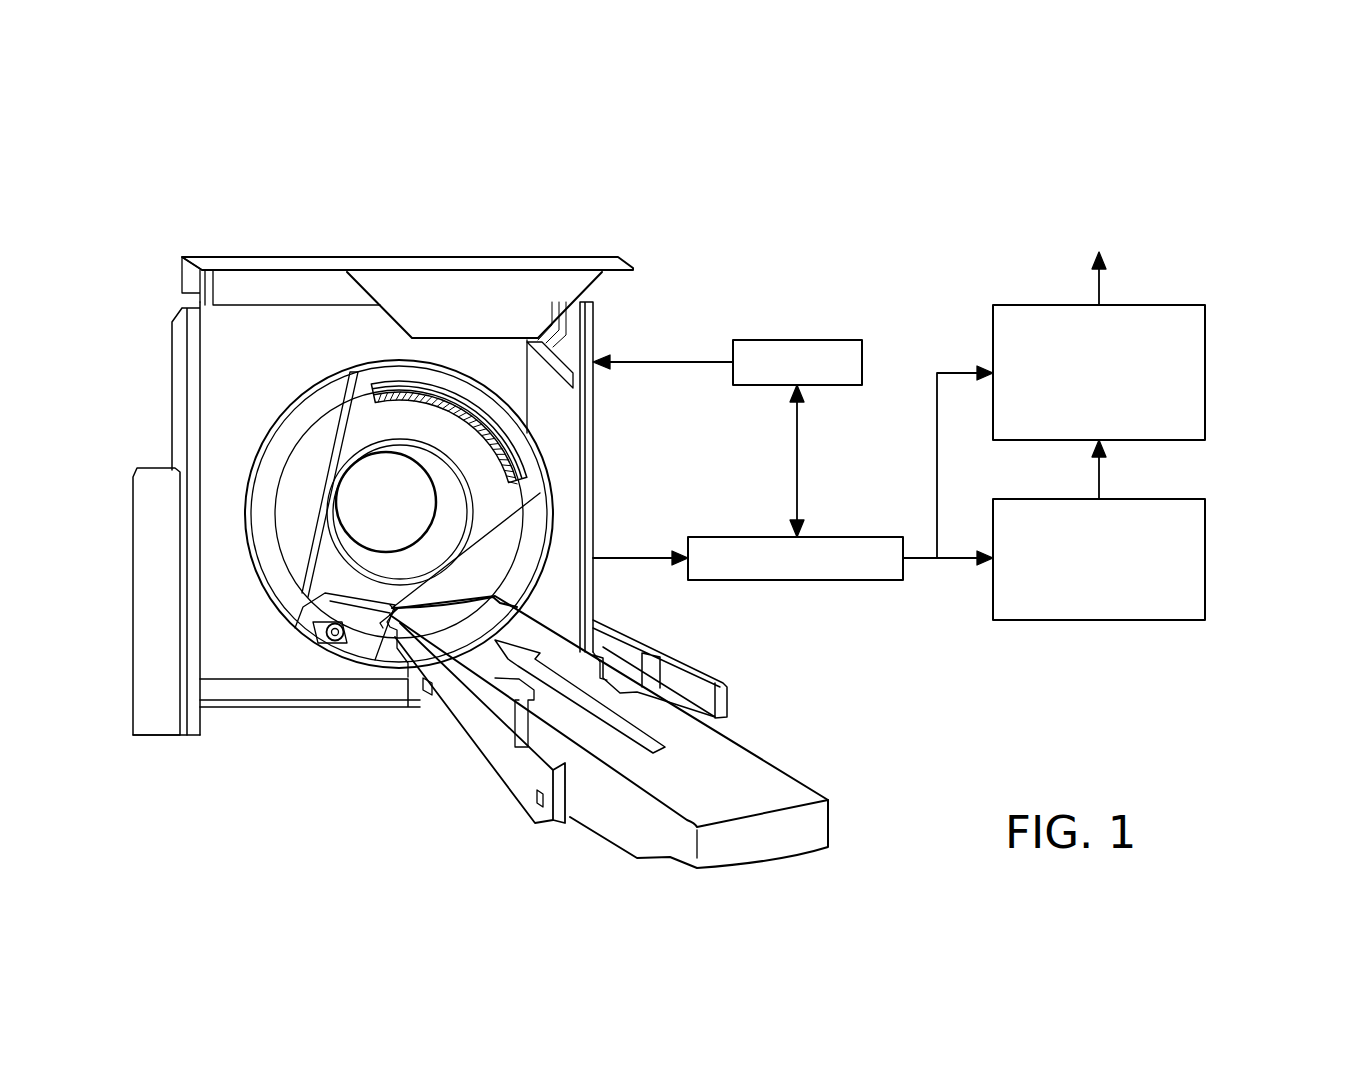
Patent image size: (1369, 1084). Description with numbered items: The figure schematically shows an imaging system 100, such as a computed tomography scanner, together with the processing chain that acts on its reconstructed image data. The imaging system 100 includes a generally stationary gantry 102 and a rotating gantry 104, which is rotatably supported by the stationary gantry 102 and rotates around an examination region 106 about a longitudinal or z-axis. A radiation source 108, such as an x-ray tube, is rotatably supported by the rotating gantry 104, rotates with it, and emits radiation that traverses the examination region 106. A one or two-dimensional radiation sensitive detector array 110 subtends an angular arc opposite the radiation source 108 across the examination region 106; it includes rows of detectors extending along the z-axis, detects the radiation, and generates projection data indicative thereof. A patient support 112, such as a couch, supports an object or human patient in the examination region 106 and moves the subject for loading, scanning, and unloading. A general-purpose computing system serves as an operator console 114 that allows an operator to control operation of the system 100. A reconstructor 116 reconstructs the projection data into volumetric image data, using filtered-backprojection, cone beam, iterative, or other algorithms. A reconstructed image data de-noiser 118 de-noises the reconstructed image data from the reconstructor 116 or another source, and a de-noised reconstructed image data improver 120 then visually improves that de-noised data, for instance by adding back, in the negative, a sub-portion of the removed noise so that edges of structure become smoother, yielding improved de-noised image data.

The imaging system 100 is at (233, 212).
The stationary gantry 102 is at (192, 408).
The rotating gantry 104 is at (370, 422).
The examination region 106 is at (407, 513).
The radiation source 108 is at (327, 645).
The radiation sensitive detector array 110 is at (507, 440).
The patient support 112 is at (765, 800).
The operator console 114 is at (795, 340).
The reconstructor 116 is at (732, 537).
The reconstructed image data de-noiser 118 is at (1206, 560).
The de-noised reconstructed image data improver 120 is at (1206, 383).